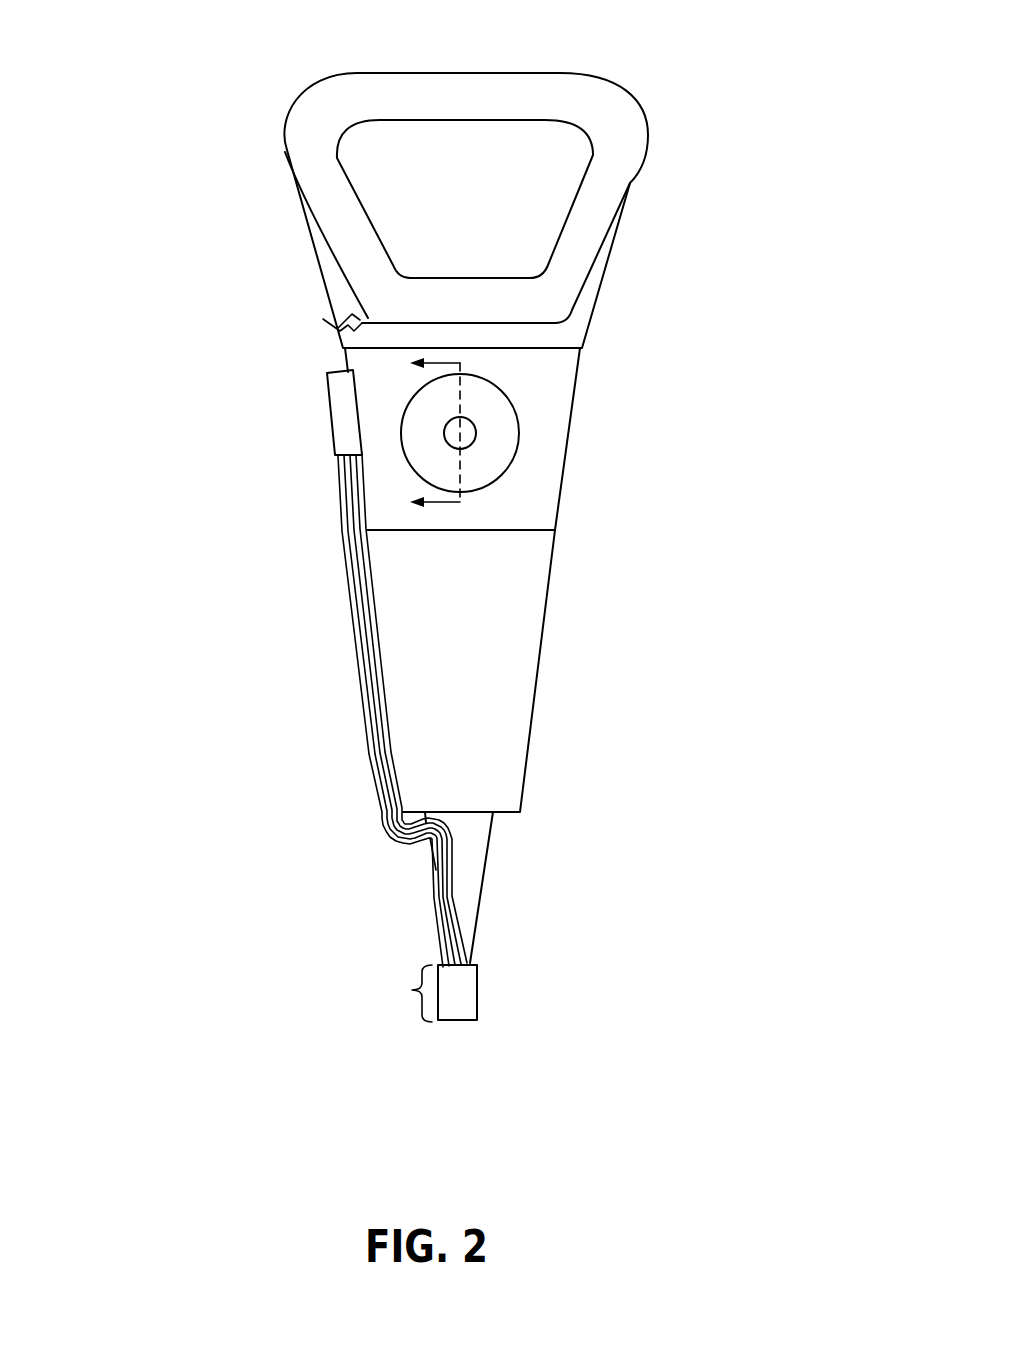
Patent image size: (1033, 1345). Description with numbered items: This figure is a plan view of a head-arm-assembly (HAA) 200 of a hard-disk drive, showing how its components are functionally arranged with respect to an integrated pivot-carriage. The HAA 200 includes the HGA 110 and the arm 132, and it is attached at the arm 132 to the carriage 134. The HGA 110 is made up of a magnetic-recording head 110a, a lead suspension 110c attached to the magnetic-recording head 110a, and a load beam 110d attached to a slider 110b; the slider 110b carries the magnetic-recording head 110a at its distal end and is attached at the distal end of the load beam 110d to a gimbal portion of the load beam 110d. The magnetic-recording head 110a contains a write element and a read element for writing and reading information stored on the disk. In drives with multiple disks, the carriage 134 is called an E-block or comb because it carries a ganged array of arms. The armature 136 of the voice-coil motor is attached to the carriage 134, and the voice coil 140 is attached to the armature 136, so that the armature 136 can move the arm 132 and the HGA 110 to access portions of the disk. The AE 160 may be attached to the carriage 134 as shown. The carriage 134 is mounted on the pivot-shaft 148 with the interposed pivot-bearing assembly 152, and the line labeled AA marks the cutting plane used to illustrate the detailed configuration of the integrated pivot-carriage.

The handheld device 200 is at (158, 68).
The voice coil 140 is at (348, 230).
The armature 136 is at (338, 297).
The AE 160 is at (340, 425).
The pivot-shaft 148 is at (463, 431).
The pivot-bearing assembly 152 is at (493, 442).
The carriage 134 is at (523, 490).
The arm 132 is at (450, 620).
The HGA 110 is at (292, 738).
The magnetic-recording head 110a is at (364, 984).
The slider 110b is at (410, 990).
The lead suspension 110c is at (437, 897).
The load beam 110d is at (460, 853).